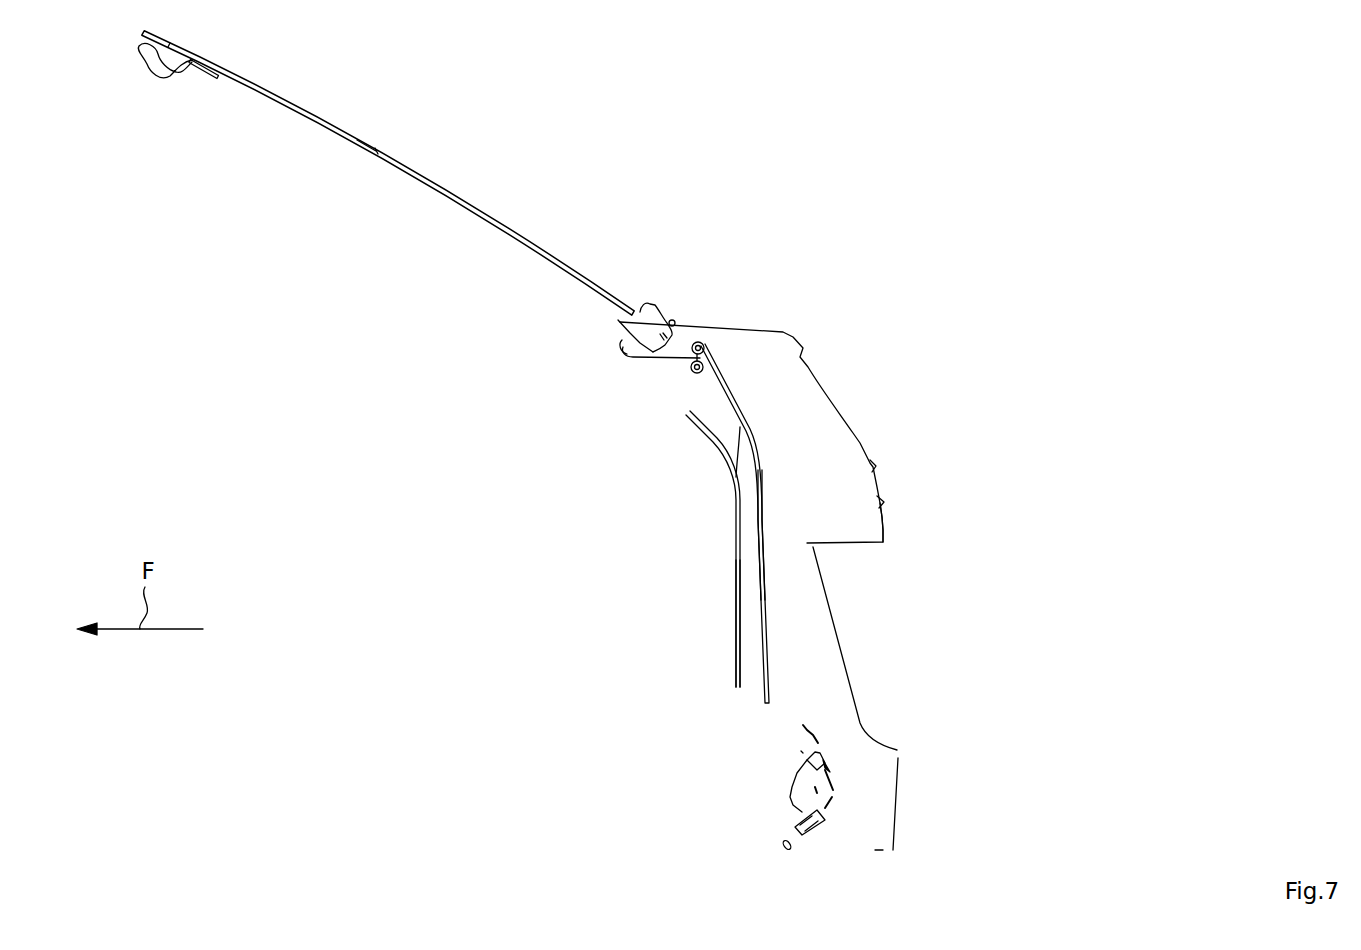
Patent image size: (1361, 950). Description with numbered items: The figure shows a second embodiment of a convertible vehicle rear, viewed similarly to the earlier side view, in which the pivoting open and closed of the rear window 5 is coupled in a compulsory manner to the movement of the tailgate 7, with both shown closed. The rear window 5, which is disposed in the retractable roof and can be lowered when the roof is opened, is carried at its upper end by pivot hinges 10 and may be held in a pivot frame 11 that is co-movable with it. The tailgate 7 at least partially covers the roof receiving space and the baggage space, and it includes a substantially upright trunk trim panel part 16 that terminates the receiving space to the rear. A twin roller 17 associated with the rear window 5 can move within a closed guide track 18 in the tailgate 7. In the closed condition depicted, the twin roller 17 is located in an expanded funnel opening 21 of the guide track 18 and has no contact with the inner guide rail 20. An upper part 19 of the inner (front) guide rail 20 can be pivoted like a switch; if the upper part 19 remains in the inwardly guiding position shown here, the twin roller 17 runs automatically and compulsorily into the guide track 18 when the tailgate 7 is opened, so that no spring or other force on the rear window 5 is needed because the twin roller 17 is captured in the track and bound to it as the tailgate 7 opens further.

The rear window 5 is at (357, 138).
The tailgate 7 is at (753, 332).
The pivot hinges 10 is at (143, 63).
The pivot frame 11 is at (627, 336).
The trunk trim panel part 16 is at (887, 530).
The twin roller 17 is at (696, 345).
The guide track 18 is at (755, 531).
The upper part 19 is at (702, 423).
The inner guide rail 20 is at (737, 558).
The funnel opening 21 is at (705, 397).